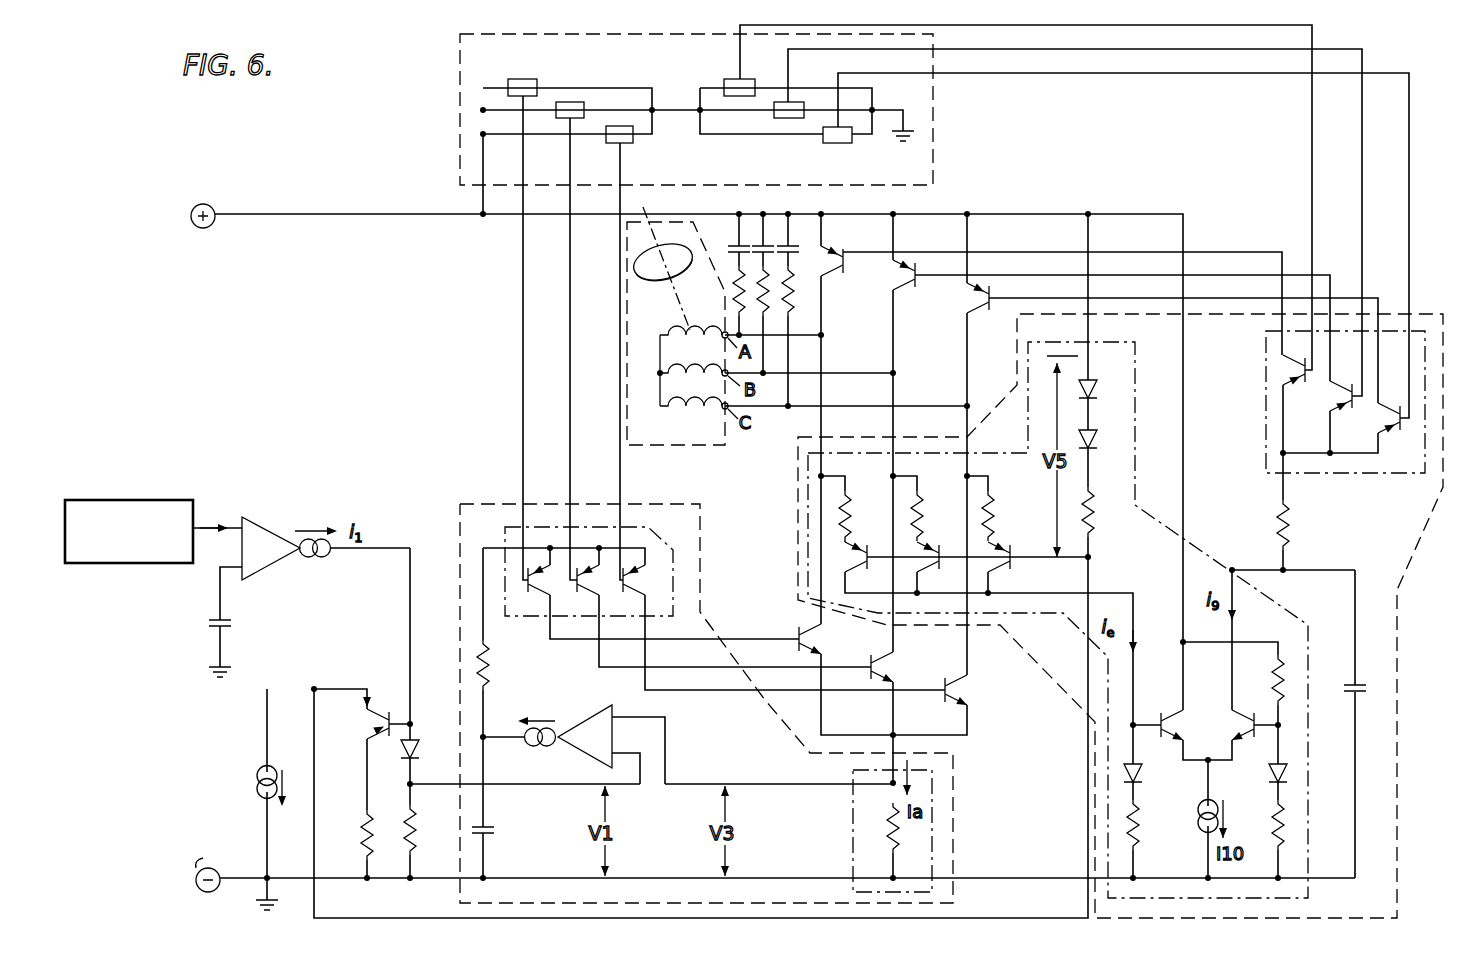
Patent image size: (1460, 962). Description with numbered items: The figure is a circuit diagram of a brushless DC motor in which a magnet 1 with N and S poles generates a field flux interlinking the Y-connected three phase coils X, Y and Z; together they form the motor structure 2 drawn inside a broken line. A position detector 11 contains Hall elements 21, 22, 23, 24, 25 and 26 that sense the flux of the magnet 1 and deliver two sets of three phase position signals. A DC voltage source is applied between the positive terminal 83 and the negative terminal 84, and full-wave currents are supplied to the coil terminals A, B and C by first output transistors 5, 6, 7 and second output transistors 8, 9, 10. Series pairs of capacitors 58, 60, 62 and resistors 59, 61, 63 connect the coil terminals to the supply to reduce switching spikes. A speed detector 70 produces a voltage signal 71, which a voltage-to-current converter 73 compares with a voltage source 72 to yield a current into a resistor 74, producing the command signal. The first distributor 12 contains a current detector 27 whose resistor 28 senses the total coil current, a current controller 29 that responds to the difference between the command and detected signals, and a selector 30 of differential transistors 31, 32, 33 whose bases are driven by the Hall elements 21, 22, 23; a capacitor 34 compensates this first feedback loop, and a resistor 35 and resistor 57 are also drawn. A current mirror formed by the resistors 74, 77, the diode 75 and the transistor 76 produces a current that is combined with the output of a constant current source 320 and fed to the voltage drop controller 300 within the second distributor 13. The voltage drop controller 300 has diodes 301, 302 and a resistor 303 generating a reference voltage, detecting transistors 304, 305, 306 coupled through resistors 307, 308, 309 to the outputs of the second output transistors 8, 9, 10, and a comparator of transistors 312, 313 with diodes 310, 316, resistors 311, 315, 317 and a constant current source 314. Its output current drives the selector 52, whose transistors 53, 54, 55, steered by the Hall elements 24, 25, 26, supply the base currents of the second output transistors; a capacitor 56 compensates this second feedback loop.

The magnet 1 is at (663, 268).
The motor structure 2 is at (702, 450).
The first output transistor 5 is at (804, 630).
The first output transistor 6 is at (876, 660).
The first output transistor 7 is at (955, 668).
The second output transistor 8 is at (838, 266).
The second output transistor 9 is at (902, 286).
The second output transistor 10 is at (975, 308).
The position detector 11 is at (938, 152).
The first distributor 12 is at (503, 500).
The second distributor 13 is at (1398, 690).
The Hall element 21 is at (520, 79).
The Hall element 22 is at (569, 102).
The Hall element 23 is at (620, 126).
The Hall element 24 is at (735, 79).
The Hall element 25 is at (780, 102).
The Hall element 26 is at (826, 143).
The current detector 27 is at (853, 850).
The resistor 28 is at (890, 828).
The current controller 29 is at (568, 716).
The selector 30 is at (530, 618).
The transistor 31 is at (538, 590).
The transistor 32 is at (587, 590).
The transistor 33 is at (633, 590).
The capacitor 34 is at (488, 832).
The resistor 35 is at (488, 693).
The selector 52 is at (1265, 452).
The transistor 53 is at (1310, 378).
The transistor 54 is at (1347, 405).
The transistor 55 is at (1388, 430).
The capacitor 56 is at (1360, 692).
The resistor 57 is at (1288, 520).
The capacitor 58 is at (737, 248).
The resistor 59 is at (735, 293).
The capacitor 60 is at (766, 240).
The resistor 61 is at (765, 312).
The capacitor 62 is at (790, 248).
The resistor 63 is at (792, 306).
The speed detector 70 is at (181, 500).
The voltage signal 71 is at (206, 528).
The voltage source 72 is at (232, 622).
The voltage-to-current converter 73 is at (250, 516).
The resistor 74 is at (416, 846).
The diode 75 is at (416, 744).
The transistor 76 is at (378, 712).
The resistor 77 is at (364, 848).
The terminal 83 is at (212, 226).
The terminal 84 is at (191, 871).
The voltage drop controller 300 is at (1137, 425).
The diode 301 is at (1096, 392).
The diode 302 is at (1096, 444).
The resistor 303 is at (1096, 505).
The detecting transistor 304 is at (866, 564).
The detecting transistor 305 is at (938, 564).
The detecting transistor 306 is at (1010, 566).
The resistor 307 is at (850, 508).
The resistor 308 is at (922, 508).
The resistor 309 is at (993, 512).
The diode 310 is at (1145, 774).
The resistor 311 is at (1137, 820).
The transistor 312 is at (1160, 715).
The transistor 313 is at (1248, 728).
The constant current source 314 is at (1200, 826).
The resistor 315 is at (1275, 682).
The diode 316 is at (1268, 774).
The resistor 317 is at (1275, 835).
The constant current source 320 is at (257, 802).